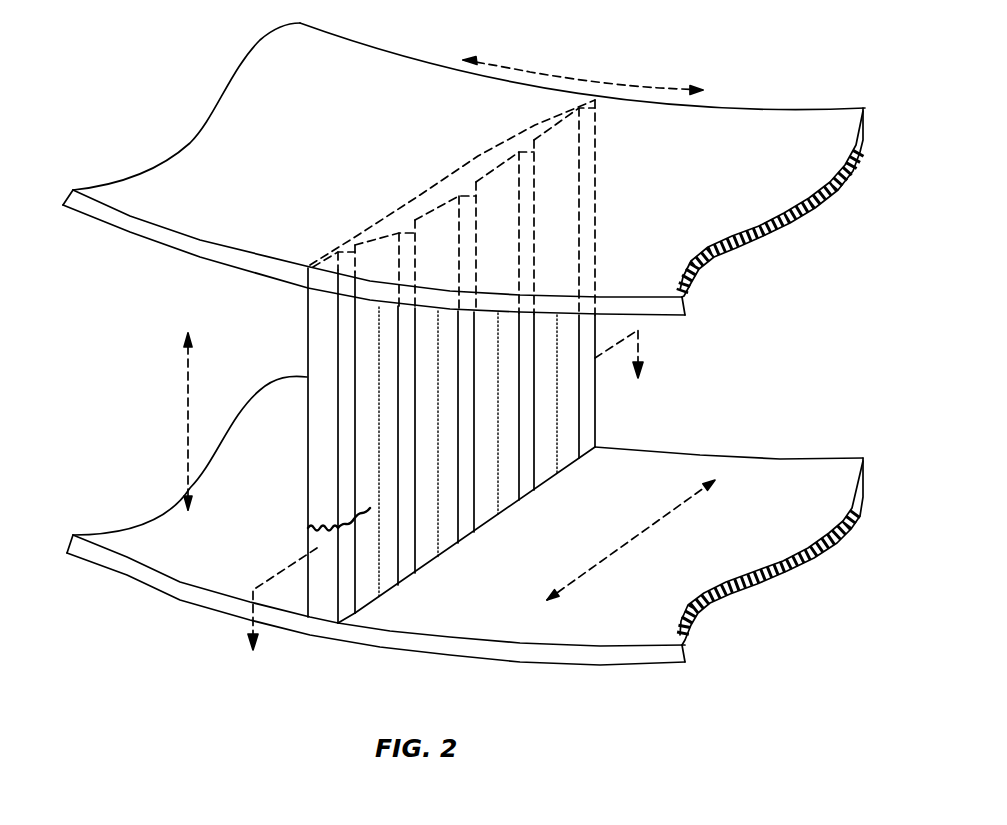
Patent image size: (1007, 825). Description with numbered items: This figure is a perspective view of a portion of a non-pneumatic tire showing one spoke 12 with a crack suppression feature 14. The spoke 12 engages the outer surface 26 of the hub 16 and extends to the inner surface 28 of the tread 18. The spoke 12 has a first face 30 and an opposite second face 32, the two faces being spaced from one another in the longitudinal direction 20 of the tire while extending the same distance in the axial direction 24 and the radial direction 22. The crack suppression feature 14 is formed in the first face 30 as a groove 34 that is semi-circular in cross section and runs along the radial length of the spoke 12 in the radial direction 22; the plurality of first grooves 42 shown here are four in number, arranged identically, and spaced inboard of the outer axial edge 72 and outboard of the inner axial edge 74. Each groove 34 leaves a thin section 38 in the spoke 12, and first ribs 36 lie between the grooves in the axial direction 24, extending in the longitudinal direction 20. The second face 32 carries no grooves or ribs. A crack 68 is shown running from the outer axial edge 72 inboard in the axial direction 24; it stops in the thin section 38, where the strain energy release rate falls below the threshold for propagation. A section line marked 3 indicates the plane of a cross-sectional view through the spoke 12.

The spoke 12 is at (317, 365).
The crack suppression feature 14 is at (370, 565).
The hub 16 is at (773, 128).
The tread 18 is at (587, 635).
The longitudinal direction 20 is at (598, 82).
The radial direction 22 is at (187, 410).
The axial direction 24 is at (647, 532).
The outer surface 26 is at (667, 320).
The inner surface 28 is at (818, 476).
The first face 30 is at (468, 508).
The second face 32 is at (305, 318).
The groove 34 is at (364, 425).
The first ribs 36 is at (527, 457).
The thin section 38 is at (477, 156).
The plurality of first grooves 42 is at (492, 470).
The crack 68 is at (313, 508).
The outer axial edge 72 is at (325, 607).
The inner axial edge 74 is at (595, 418).
The section line 3- 3 is at (443, 507).